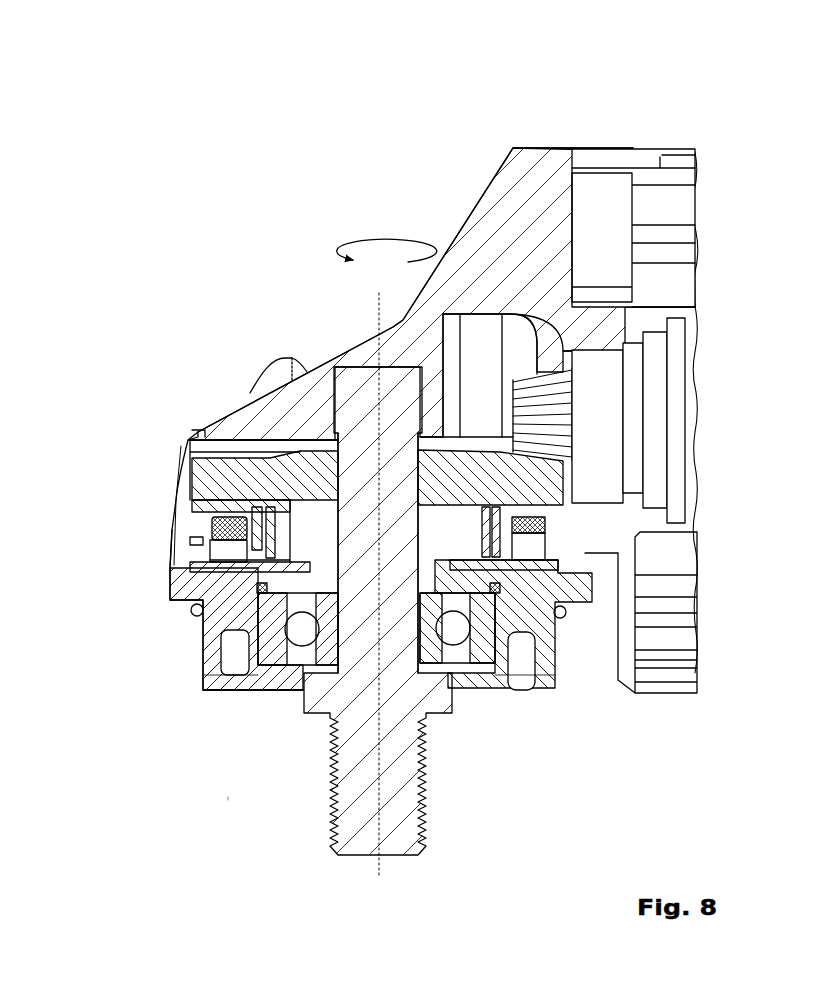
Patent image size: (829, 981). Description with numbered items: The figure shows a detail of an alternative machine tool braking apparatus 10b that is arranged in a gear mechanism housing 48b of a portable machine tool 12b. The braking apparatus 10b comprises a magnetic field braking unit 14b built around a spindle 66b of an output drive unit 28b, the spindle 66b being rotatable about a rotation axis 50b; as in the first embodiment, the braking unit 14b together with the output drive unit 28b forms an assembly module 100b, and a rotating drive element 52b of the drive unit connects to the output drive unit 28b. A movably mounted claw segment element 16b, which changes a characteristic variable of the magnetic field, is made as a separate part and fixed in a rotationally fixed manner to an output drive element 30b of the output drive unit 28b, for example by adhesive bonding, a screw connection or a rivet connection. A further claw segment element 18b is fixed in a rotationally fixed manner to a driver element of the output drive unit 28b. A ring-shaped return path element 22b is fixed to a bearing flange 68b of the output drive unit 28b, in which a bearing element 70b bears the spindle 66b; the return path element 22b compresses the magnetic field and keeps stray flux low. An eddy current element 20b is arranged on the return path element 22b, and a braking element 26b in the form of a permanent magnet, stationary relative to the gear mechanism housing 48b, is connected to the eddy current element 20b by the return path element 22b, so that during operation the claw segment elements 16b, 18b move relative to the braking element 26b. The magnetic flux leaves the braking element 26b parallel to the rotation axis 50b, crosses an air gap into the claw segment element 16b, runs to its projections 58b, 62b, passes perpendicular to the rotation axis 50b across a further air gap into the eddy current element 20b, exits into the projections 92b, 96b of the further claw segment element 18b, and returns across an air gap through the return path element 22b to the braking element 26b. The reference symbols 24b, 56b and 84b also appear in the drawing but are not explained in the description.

The machine tool braking apparatus 10b is at (133, 362).
The portable machine tool 12b is at (672, 93).
The magnetic field braking unit 14b is at (140, 518).
The claw segment element 16b is at (202, 512).
The further claw segment element 18b is at (463, 555).
The eddy current element 20b is at (185, 572).
The return path element 22b is at (290, 565).
The shaft 24b is at (380, 877).
The braking element 26b is at (250, 534).
The output drive unit 28b is at (300, 195).
The output drive element 30b is at (263, 465).
The gear mechanism housing 48b is at (551, 163).
The rotation axis 50b is at (334, 676).
The drive element 52b is at (543, 397).
The housing projection 56b is at (320, 477).
The projection 58b is at (250, 545).
The projection 62b is at (505, 523).
The spindle 66b is at (352, 806).
The bearing flange 68b is at (191, 611).
The bearing element 70b is at (278, 655).
The rotation direction 84b is at (380, 237).
The projection 92b is at (287, 558).
The projection 96b is at (477, 540).
The assembly module 100b is at (228, 797).